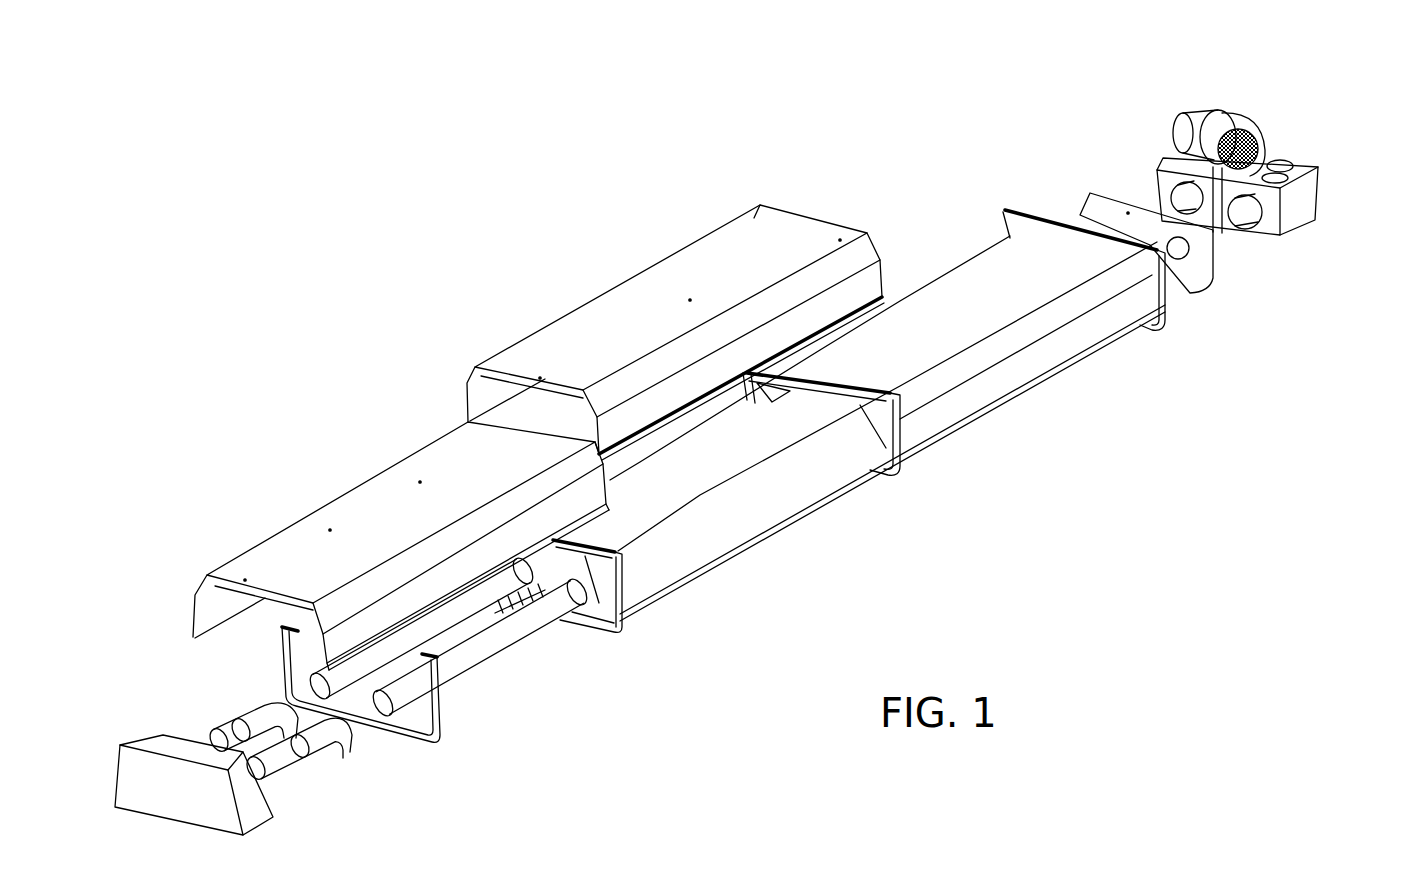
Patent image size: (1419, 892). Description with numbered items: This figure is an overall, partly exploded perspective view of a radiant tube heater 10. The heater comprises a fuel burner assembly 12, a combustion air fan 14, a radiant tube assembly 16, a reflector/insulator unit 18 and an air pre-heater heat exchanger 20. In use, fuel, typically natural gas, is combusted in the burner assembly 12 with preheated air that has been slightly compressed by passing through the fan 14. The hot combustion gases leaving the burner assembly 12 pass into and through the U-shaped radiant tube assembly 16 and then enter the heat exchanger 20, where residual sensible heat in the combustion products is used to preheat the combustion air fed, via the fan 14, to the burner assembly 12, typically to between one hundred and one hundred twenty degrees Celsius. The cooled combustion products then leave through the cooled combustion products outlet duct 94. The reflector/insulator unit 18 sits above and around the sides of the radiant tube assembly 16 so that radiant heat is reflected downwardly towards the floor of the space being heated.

The radiant tube heater 10 is at (641, 209).
The fuel burner assembly 12 is at (1121, 177).
The combustion air fan 14 is at (1184, 116).
The radiant tube assembly 16 is at (520, 652).
The reflector/insulator unit 18 is at (228, 541).
The air pre-heater heat exchanger 20 is at (1313, 201).
The cooled combustion products outlet duct 94 is at (1252, 132).